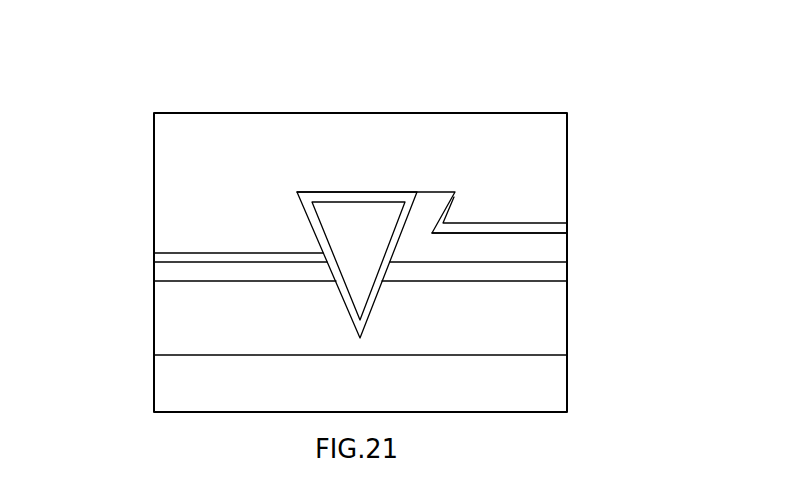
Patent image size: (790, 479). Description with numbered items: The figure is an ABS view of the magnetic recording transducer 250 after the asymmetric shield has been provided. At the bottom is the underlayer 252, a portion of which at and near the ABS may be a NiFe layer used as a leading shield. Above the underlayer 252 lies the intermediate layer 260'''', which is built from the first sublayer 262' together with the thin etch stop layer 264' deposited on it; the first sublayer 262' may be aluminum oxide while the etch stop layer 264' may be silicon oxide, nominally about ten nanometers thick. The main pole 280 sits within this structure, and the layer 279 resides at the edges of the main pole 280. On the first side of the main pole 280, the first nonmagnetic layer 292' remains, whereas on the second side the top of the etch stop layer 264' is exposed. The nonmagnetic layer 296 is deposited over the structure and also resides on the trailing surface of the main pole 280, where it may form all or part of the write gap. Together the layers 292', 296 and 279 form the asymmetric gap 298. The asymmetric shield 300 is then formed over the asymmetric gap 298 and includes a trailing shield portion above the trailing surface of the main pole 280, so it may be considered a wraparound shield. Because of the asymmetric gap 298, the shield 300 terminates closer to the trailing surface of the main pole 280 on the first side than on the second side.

The magnetic recording transducer 250 is at (385, 68).
The underlayer 252 is at (360, 383).
The intermediate layer 260'''' is at (192, 237).
The first sublayer 262' is at (360, 319).
The etch stop layer 264' is at (396, 302).
The layer at the edges of the main pole 279 is at (404, 213).
The main pole 280 is at (358, 261).
The first nonmagnetic layer 292' is at (432, 265).
The nonmagnetic layer 296 is at (568, 232).
The asymmetric gap 298 is at (639, 240).
The asymmetric shield 300 is at (344, 198).